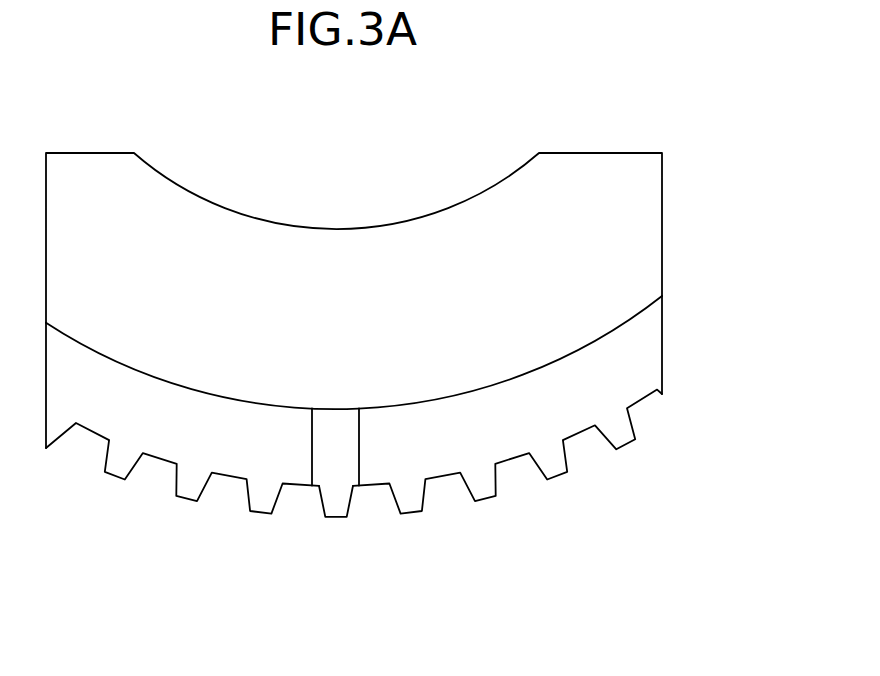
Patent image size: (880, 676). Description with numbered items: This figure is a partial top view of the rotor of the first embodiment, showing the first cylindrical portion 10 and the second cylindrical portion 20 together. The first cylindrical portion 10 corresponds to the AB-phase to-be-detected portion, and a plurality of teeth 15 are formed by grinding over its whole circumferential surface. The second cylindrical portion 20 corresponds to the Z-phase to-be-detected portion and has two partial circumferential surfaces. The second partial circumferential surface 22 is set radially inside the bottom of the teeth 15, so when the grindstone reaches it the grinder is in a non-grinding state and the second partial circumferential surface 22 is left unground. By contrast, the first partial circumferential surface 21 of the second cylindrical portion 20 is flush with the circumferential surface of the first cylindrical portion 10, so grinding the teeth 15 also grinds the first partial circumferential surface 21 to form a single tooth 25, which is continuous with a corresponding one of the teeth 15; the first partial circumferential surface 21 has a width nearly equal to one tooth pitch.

The first cylindrical portion 10 is at (354, 439).
The teeth 15 is at (560, 478).
The second cylindrical portion 20 is at (210, 284).
The first partial circumferential surface 21 is at (340, 518).
The second partial circumferential surface 22 is at (608, 335).
The tooth 25 is at (326, 509).